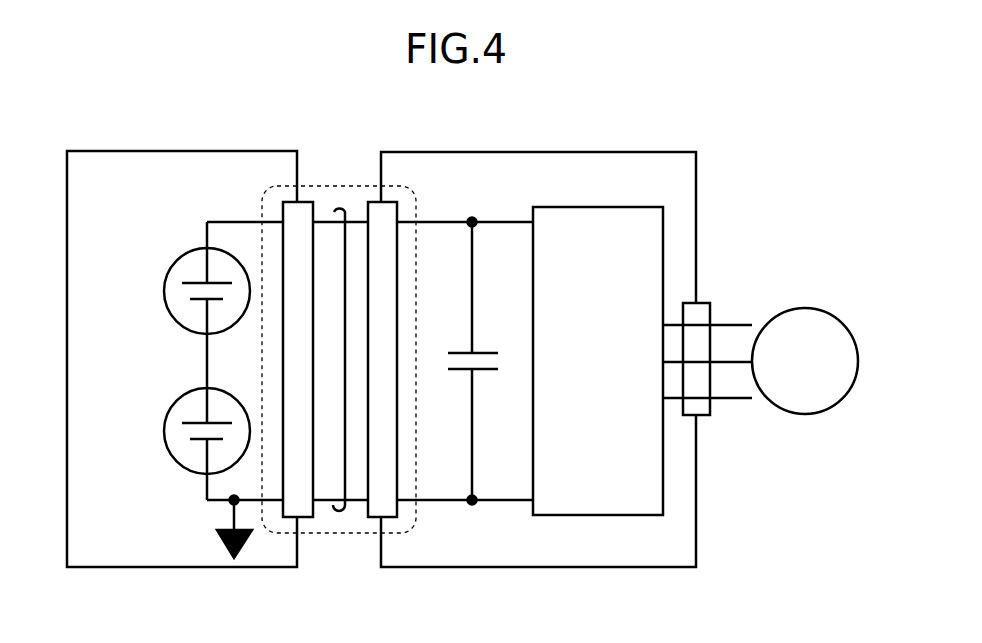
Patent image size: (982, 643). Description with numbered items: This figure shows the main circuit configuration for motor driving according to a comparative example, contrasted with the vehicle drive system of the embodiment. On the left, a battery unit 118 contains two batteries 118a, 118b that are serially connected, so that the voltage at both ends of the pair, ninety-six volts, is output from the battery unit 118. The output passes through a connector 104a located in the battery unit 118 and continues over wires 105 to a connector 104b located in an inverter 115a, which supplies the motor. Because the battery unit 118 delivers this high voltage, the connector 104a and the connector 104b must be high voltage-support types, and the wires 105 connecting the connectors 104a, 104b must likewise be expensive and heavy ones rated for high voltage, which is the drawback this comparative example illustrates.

The battery unit 118 is at (110, 150).
The battery 118a is at (167, 277).
The battery 118b is at (166, 445).
The connector 104a is at (309, 200).
The connector 104b is at (376, 200).
The wires 105 is at (334, 207).
The inverter 115a is at (620, 152).